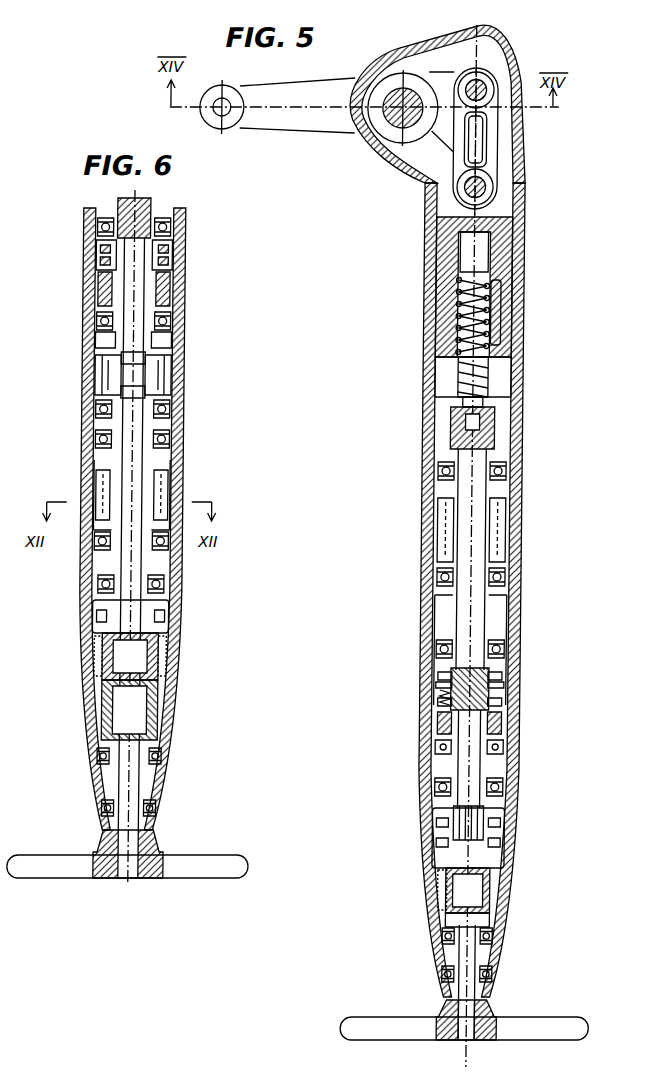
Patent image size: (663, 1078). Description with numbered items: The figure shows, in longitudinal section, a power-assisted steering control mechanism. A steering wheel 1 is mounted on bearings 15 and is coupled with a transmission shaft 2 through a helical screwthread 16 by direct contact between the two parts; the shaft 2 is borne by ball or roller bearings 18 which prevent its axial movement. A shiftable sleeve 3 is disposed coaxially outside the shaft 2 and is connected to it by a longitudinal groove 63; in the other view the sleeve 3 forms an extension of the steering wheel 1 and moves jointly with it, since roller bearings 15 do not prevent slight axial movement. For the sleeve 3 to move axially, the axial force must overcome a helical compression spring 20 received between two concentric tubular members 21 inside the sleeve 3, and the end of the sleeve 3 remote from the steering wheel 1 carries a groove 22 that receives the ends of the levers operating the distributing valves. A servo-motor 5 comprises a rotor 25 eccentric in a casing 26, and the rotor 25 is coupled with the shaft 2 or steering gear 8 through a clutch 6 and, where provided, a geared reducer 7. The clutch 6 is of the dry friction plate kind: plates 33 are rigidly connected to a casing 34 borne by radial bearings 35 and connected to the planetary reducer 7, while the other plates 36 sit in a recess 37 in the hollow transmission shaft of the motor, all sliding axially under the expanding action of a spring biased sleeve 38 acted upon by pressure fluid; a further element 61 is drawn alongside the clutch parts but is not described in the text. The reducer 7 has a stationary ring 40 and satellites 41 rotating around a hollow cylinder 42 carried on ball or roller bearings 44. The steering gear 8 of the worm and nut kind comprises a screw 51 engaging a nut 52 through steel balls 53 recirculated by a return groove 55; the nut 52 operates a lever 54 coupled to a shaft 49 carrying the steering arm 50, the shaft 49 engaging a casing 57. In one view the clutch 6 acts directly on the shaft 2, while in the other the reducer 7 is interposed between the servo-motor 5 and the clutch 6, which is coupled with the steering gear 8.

In FIG. 5, the steering wheel 1 is at (399, 1010).
In FIG. 6, the steering wheel 1 is at (52, 846).
In FIG. 5, the transmission shaft 2 is at (466, 758).
In FIG. 6, the transmission shaft 2 is at (176, 561).
In FIG. 5, the shiftable sleeve 3 is at (492, 851).
In FIG. 6, the shiftable sleeve 3 is at (101, 626).
In FIG. 5, the servo-motor 5 is at (521, 548).
In FIG. 6, the servo-motor 5 is at (171, 496).
In FIG. 5, the clutch 6 is at (501, 686).
In FIG. 6, the clutch 6 is at (172, 259).
In FIG. 6, the geared reducer 7 is at (171, 396).
In FIG. 5, the steering gear 8 is at (514, 243).
In FIG. 6, the steering gear 8 is at (131, 519).
In FIG. 5, the bearings 15 is at (500, 936).
In FIG. 6, the bearings 15 is at (161, 756).
In FIG. 5, the helical screwthread 16 is at (494, 913).
In FIG. 6, the helical screwthread 16 is at (141, 708).
In FIG. 5, the ball or roller bearings 18 is at (508, 791).
In FIG. 6, the ball or roller bearings 18 is at (166, 586).
In FIG. 5, the helical compression spring 20 is at (494, 883).
In FIG. 6, the helical compression spring 20 is at (156, 653).
In FIG. 5, the concentric tubular members 21 is at (446, 876).
In FIG. 6, the concentric tubular members 21 is at (99, 641).
In FIG. 5, the groove 22 is at (445, 837).
In FIG. 6, the groove 22 is at (161, 619).
In FIG. 5, the rotor 25 is at (506, 533).
In FIG. 6, the rotor 25 is at (161, 484).
In FIG. 5, the casing 26 is at (431, 531).
In FIG. 6, the casing 26 is at (91, 496).
In FIG. 5, the clutch plates 33 is at (506, 698).
In FIG. 6, the clutch plates 33 is at (169, 262).
In FIG. 5, the clutch casing 34 is at (503, 672).
In FIG. 6, the clutch casing 34 is at (181, 302).
In FIG. 5, the radial bearings 35 is at (508, 651).
In FIG. 6, the radial bearings 35 is at (162, 216).
In FIG. 5, the clutch plates 36 is at (431, 681).
In FIG. 6, the clutch plates 36 is at (102, 252).
In FIG. 5, the recess 37 is at (441, 691).
In FIG. 5, the spring biased sleeve 38 is at (508, 745).
In FIG. 6, the spring biased sleeve 38 is at (100, 331).
In FIG. 6, the stationary ring 40 is at (166, 379).
In FIG. 6, the satellites 41 is at (96, 373).
In FIG. 6, the hollow cylinder 42 is at (176, 351).
In FIG. 6, the ball or roller bearings 44 is at (176, 441).
In FIG. 5, the shaft 49 is at (395, 128).
In FIG. 5, the steering arm 50 is at (300, 118).
In FIG. 5, the screw 51 is at (484, 367).
In FIG. 5, the nut 52 is at (501, 263).
In FIG. 5, the steel balls 53 is at (497, 325).
In FIG. 5, the lever 54 is at (484, 132).
In FIG. 5, the return groove 55 is at (501, 305).
In FIG. 5, the casing 57 is at (507, 53).
In FIG. 5, the spring 61 is at (506, 719).
In FIG. 6, the spring 61 is at (102, 286).
In FIG. 5, the longitudinal groove 63 is at (455, 822).